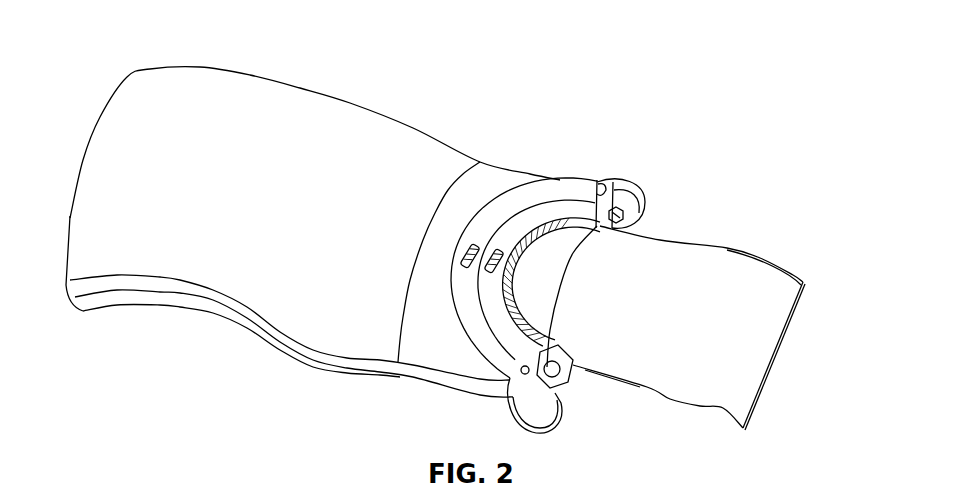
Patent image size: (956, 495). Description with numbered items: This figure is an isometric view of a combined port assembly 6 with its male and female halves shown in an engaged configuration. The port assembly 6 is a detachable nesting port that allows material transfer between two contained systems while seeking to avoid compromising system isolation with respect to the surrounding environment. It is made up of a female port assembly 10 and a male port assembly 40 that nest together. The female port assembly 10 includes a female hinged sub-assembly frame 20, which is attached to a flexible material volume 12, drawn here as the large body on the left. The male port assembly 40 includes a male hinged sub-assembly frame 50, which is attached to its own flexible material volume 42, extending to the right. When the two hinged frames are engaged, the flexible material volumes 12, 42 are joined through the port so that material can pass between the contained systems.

The female port assembly 10 is at (218, 275).
The flexible material volume 12 is at (426, 145).
The female hinged sub-assembly frame 20 is at (578, 188).
The male hinged sub-assembly frame 50 is at (602, 182).
The port assembly 6 is at (642, 188).
The male port assembly 40 is at (653, 343).
The flexible material volume 42 is at (727, 264).